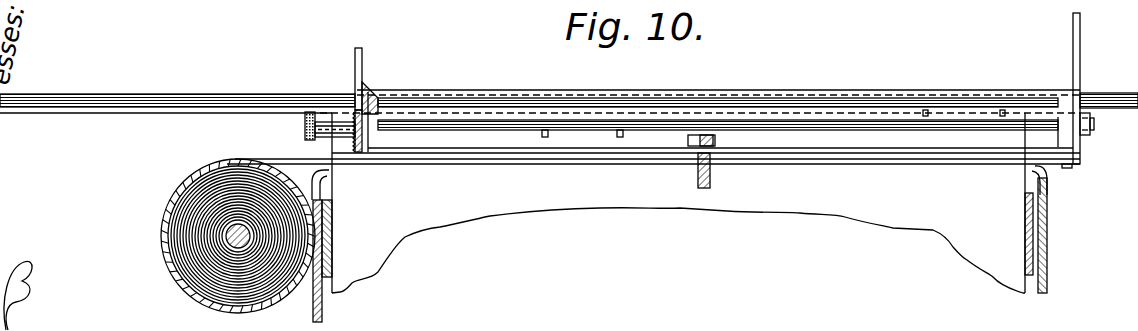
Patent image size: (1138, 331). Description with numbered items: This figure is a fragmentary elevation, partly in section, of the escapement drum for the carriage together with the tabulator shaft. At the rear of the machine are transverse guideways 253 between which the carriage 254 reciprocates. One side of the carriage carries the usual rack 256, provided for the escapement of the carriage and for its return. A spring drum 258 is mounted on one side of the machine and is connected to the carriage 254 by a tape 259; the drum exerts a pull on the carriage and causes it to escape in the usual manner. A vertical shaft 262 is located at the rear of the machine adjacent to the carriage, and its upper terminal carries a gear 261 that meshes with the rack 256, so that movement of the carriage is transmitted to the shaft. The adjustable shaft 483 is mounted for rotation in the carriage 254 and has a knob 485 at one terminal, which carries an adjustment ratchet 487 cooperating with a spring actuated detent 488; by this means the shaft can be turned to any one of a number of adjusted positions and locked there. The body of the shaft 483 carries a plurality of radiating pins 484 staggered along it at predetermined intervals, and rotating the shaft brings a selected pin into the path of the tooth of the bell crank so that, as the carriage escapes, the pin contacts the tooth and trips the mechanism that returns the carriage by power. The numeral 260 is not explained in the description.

The transverse guideways 253 is at (287, 83).
The carriage 254 is at (1028, 91).
The rack 256 is at (895, 152).
The spring drum 258 is at (177, 278).
The tape 259 is at (419, 165).
The plate 260 is at (1068, 168).
The gear 261 is at (688, 150).
The vertical shaft 262 is at (712, 166).
The adjustable shaft 483 is at (500, 131).
The radiating pins 484 is at (620, 137).
The knob 485 is at (306, 128).
The adjustment ratchet 487 is at (358, 108).
The spring actuated detent 488 is at (358, 95).